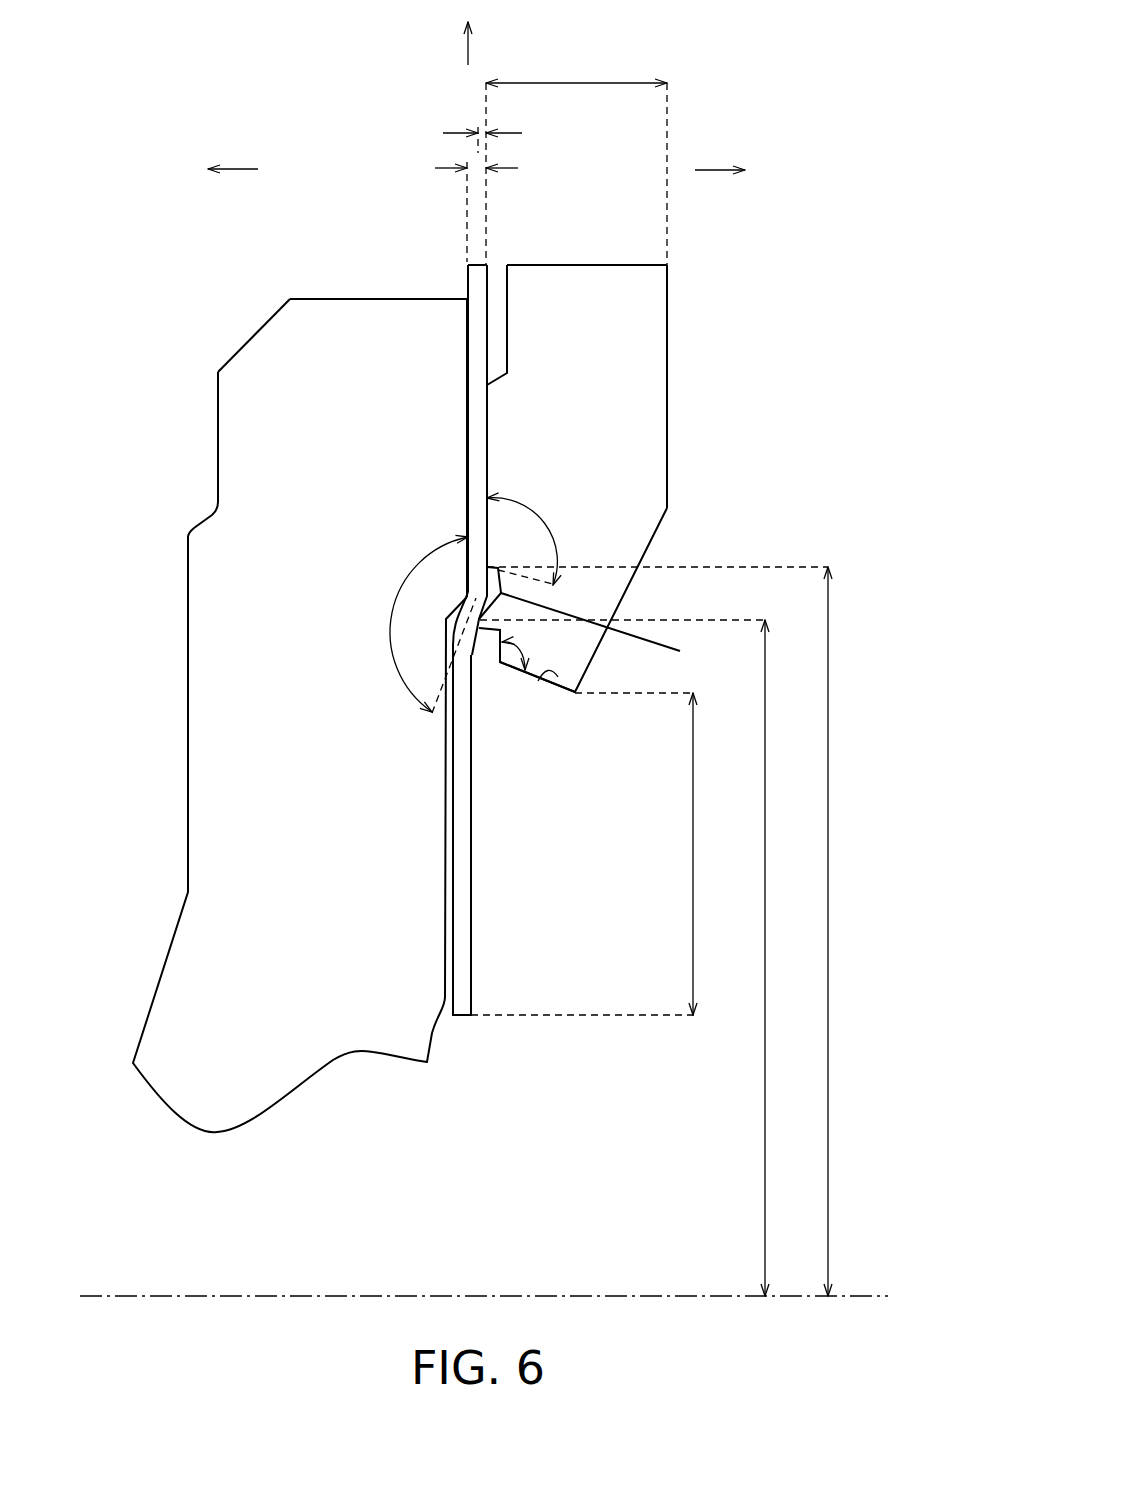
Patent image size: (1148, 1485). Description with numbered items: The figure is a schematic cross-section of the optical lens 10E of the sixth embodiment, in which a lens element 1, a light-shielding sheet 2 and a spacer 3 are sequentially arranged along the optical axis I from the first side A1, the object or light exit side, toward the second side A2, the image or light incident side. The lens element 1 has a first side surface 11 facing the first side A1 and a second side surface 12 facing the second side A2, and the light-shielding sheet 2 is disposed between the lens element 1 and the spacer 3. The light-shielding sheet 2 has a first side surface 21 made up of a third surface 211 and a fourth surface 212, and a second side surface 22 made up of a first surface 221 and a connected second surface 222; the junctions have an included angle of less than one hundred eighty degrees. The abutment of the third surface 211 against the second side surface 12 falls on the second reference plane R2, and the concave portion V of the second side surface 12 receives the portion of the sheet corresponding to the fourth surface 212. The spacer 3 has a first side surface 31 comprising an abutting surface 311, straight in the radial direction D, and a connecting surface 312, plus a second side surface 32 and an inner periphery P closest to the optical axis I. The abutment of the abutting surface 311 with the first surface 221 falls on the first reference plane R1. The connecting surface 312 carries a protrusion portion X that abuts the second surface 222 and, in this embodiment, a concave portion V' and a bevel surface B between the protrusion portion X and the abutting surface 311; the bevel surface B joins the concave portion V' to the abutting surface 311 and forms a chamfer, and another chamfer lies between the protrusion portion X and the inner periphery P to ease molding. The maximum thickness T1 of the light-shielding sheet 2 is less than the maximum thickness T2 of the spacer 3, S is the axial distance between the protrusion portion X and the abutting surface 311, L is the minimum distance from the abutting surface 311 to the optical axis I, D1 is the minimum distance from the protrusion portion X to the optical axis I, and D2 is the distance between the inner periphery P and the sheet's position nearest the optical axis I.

The lens element 1 is at (338, 299).
The first side surface 11 is at (252, 335).
The second side surface 12 is at (467, 322).
The third surface 211 is at (467, 480).
The fourth surface 212 is at (446, 619).
The light-shielding sheet 2 is at (468, 263).
The first side surface 21 is at (475, 265).
The second side surface 22 is at (488, 270).
The first surface 221 is at (487, 437).
The second surface 222 is at (468, 598).
The spacer 3 is at (608, 265).
The first side surface 31 is at (507, 288).
The second side surface 32 is at (667, 283).
The abutting surface 311 is at (487, 462).
The connecting surface 312 is at (558, 678).
The optical lens 10E is at (924, 1342).
The inner periphery P is at (575, 692).
The protrusion portion X is at (490, 632).
The concave portion V is at (259, 756).
The concave portion V' is at (608, 629).
The bevel surface B is at (490, 566).
The distance S is at (478, 133).
The maximum thickness T1 is at (478, 168).
The maximum thickness T2 is at (576, 70).
The first reference plane R1 is at (487, 200).
The second reference plane R2 is at (467, 200).
The radial direction D is at (480, 43).
The first side A1 is at (234, 151).
The second side A2 is at (720, 153).
The minimum distance L is at (816, 931).
The minimum distance D1 is at (746, 958).
The distance D2 is at (671, 854).
The optical axis I is at (120, 1296).